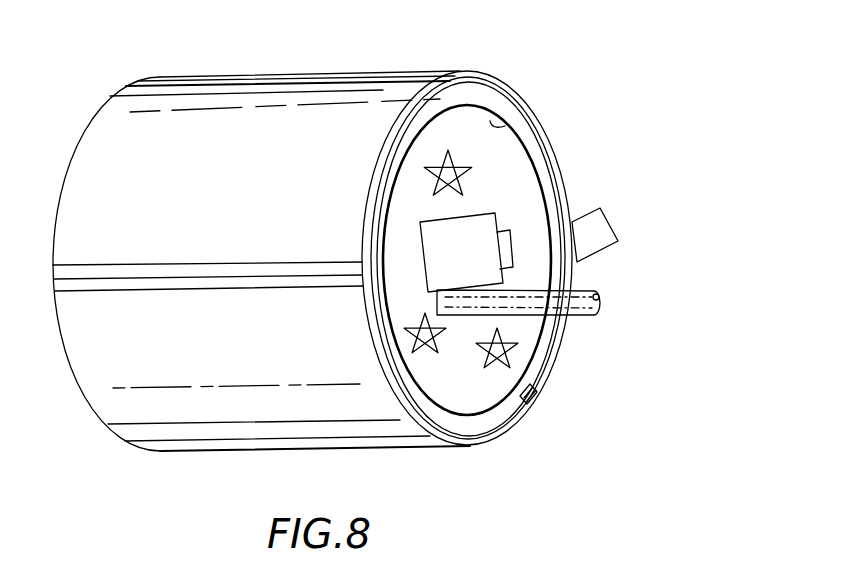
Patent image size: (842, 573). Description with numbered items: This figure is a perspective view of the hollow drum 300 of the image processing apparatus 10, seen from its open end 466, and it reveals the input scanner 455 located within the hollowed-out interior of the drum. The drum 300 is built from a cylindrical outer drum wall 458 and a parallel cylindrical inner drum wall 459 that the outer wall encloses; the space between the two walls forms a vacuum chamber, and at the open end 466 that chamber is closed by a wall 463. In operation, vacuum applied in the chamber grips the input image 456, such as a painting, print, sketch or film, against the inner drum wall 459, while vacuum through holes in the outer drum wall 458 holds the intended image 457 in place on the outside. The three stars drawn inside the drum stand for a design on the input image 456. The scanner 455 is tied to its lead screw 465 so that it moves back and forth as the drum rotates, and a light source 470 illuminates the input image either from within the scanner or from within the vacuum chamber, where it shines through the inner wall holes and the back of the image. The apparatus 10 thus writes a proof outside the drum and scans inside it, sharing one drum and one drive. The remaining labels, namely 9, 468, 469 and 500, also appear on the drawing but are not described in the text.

The rim 9 is at (437, 73).
The apparatus 10 is at (650, 65).
The drum 300 is at (545, 417).
The input scanner 455 is at (435, 240).
The input image 456 is at (507, 158).
The intended image 457 is at (102, 156).
The outer drum wall 458 is at (93, 117).
The inner drum wall 459 is at (543, 184).
The wall 463 is at (557, 203).
The lead screw 465 is at (600, 300).
The open end 466 is at (506, 124).
The connector 468 is at (513, 248).
The band 469 is at (158, 281).
The light source 470 is at (538, 393).
The drive unit 500 is at (626, 223).